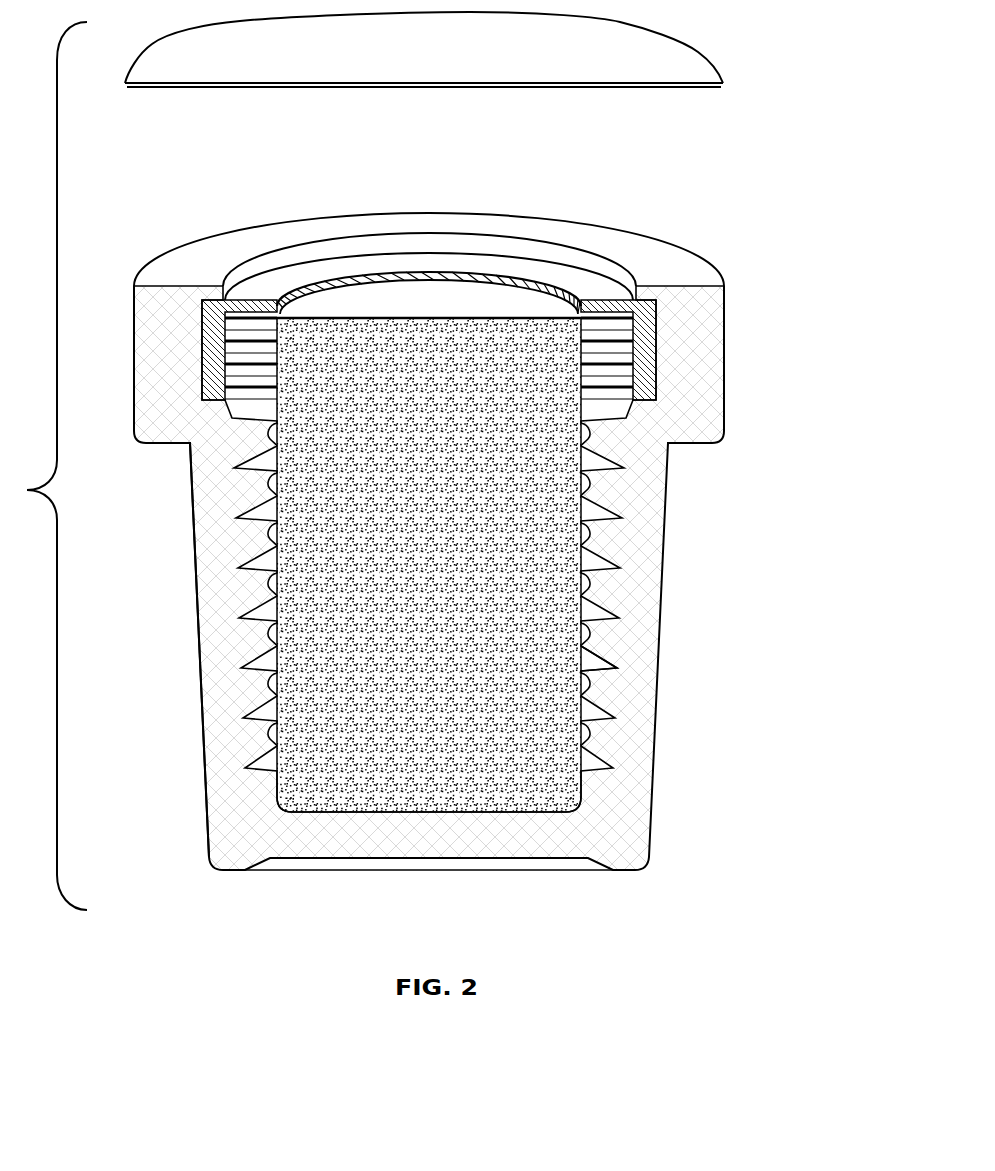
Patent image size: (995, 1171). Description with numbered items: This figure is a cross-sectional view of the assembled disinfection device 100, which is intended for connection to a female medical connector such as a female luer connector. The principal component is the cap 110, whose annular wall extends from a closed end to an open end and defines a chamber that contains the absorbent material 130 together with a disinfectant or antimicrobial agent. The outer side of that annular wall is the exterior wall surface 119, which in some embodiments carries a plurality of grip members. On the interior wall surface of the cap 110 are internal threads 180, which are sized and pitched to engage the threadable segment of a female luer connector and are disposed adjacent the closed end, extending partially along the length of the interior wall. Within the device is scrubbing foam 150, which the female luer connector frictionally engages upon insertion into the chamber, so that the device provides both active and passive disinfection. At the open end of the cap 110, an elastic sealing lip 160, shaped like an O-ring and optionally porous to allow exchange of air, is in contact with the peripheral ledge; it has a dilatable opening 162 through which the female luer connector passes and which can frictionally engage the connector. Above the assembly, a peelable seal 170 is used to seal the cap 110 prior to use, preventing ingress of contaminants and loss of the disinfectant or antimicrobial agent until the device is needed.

The disinfection device 100 is at (734, 801).
The cap 110 is at (621, 545).
The exterior wall surface 119 is at (206, 763).
The absorbent material 130 is at (530, 683).
The scrubbing foam 150 is at (620, 356).
The elastic sealing lip 160 is at (597, 286).
The dilatable opening 162 is at (548, 284).
The peelable seal 170 is at (670, 64).
The internal threads 180 is at (597, 686).